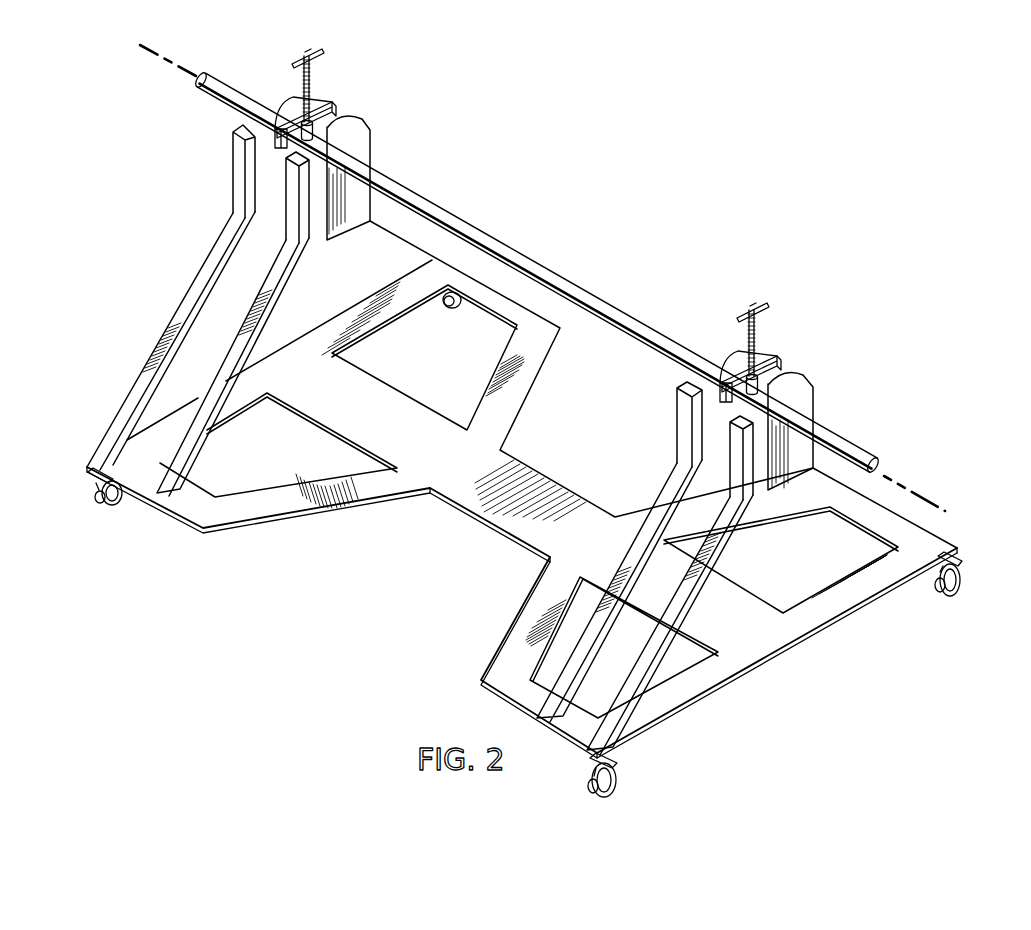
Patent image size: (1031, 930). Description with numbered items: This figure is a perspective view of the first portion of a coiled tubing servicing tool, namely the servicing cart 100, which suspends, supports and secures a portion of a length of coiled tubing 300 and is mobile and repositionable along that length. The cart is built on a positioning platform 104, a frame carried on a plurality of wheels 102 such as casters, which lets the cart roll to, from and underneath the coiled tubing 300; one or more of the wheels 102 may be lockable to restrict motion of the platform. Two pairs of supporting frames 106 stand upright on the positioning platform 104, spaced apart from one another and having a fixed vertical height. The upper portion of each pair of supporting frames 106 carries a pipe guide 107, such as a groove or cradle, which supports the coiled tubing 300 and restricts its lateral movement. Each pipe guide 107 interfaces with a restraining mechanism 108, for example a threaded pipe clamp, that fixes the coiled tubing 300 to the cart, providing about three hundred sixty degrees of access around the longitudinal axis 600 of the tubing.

The servicing cart 100 is at (780, 164).
The wheels 102 is at (103, 505).
The positioning platform 104 is at (473, 490).
The supporting frames 106 is at (310, 182).
The pipe guide 107 is at (337, 140).
The restraining mechanism 108 is at (287, 120).
The coiled tubing 300 is at (550, 272).
The longitudinal axis 600 is at (933, 503).